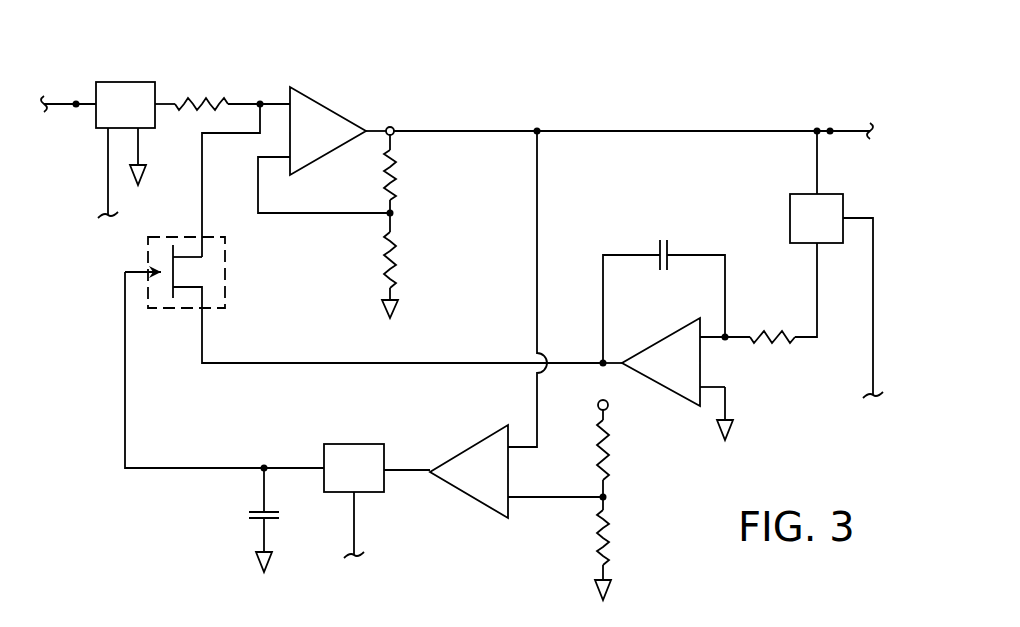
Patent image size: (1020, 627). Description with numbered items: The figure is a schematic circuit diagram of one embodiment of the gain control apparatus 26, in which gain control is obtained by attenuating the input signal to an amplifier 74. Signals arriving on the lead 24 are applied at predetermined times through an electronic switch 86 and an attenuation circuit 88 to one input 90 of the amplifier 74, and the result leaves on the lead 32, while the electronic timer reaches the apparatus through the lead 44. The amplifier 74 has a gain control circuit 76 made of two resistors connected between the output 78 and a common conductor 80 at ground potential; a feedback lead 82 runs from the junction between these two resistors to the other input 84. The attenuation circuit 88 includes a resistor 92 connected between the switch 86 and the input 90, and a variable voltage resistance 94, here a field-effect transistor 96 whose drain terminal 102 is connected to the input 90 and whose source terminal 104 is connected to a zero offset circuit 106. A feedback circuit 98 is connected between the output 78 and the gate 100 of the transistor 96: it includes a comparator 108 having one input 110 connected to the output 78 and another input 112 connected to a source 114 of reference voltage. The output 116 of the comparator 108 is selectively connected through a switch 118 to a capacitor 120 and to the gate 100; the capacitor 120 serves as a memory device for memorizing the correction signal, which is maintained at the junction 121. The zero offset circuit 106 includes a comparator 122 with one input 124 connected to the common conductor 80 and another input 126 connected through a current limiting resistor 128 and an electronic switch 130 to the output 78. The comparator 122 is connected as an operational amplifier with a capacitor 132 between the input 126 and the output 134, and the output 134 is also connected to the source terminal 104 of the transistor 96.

The lead 24 is at (66, 102).
The gain control apparatus 26 is at (153, 524).
The lead 32 is at (840, 132).
The lead 44 is at (108, 165).
The amplifier 74 is at (323, 108).
The gain control circuit 76 is at (402, 212).
The output 78 is at (372, 128).
The common conductor 80 is at (137, 185).
The feedback lead 82 is at (332, 214).
The input 84 is at (283, 147).
The electronic switch 86 is at (118, 82).
The attenuation circuit 88 is at (242, 80).
The input 90 is at (275, 103).
The resistor 92 is at (207, 100).
The variable voltage resistance 94 is at (171, 314).
The field-effect transistor 96 is at (202, 272).
The feedback circuit 98 is at (453, 524).
The gate 100 is at (152, 268).
The drain terminal 102 is at (190, 237).
The source terminal 104 is at (205, 297).
The zero offset circuit 106 is at (616, 230).
The comparator 108 is at (506, 476).
The input 110 is at (520, 440).
The input 112 is at (527, 500).
The source of reference voltage 114 is at (622, 498).
The output 116 is at (412, 468).
The switch 118 is at (348, 450).
The capacitor 120 is at (258, 512).
The junction 121 is at (262, 466).
The comparator 122 is at (700, 358).
The input 124 is at (713, 384).
The input 126 is at (716, 333).
The current limiting resistor 128 is at (775, 332).
The electronic switch 130 is at (790, 216).
The capacitor 132 is at (668, 249).
The output 134 is at (612, 360).